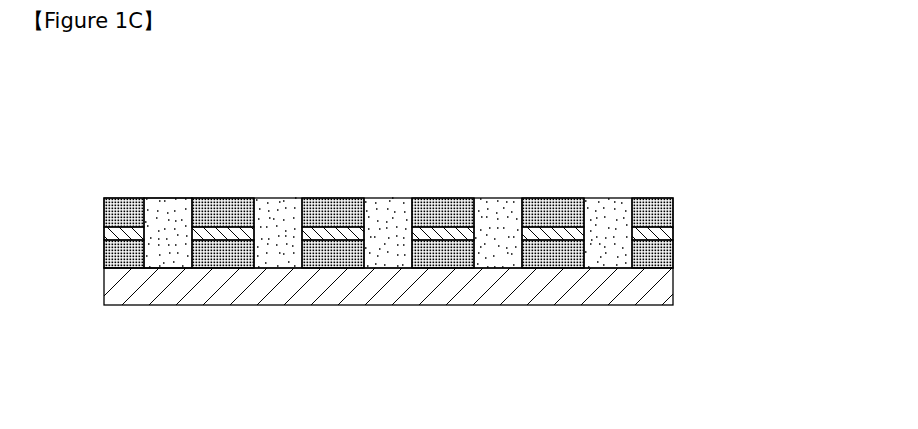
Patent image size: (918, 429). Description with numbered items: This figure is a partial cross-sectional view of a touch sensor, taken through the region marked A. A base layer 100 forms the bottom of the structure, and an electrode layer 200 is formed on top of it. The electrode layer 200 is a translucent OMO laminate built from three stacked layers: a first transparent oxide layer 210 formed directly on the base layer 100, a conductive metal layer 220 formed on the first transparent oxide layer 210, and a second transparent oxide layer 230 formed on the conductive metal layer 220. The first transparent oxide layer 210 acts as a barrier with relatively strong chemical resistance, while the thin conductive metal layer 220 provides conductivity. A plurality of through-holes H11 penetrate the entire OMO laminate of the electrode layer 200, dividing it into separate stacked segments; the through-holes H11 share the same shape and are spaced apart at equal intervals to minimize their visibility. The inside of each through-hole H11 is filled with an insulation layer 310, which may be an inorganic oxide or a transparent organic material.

The base layer 100 is at (388, 306).
The electrode layer 200 is at (462, 235).
The first transparent oxide layer 210 is at (673, 253).
The conductive metal layer 220 is at (673, 233).
The second transparent oxide layer 230 is at (673, 213).
The insulation layer 310 is at (278, 203).
The through-hole H11 is at (166, 233).
The region A is at (669, 95).